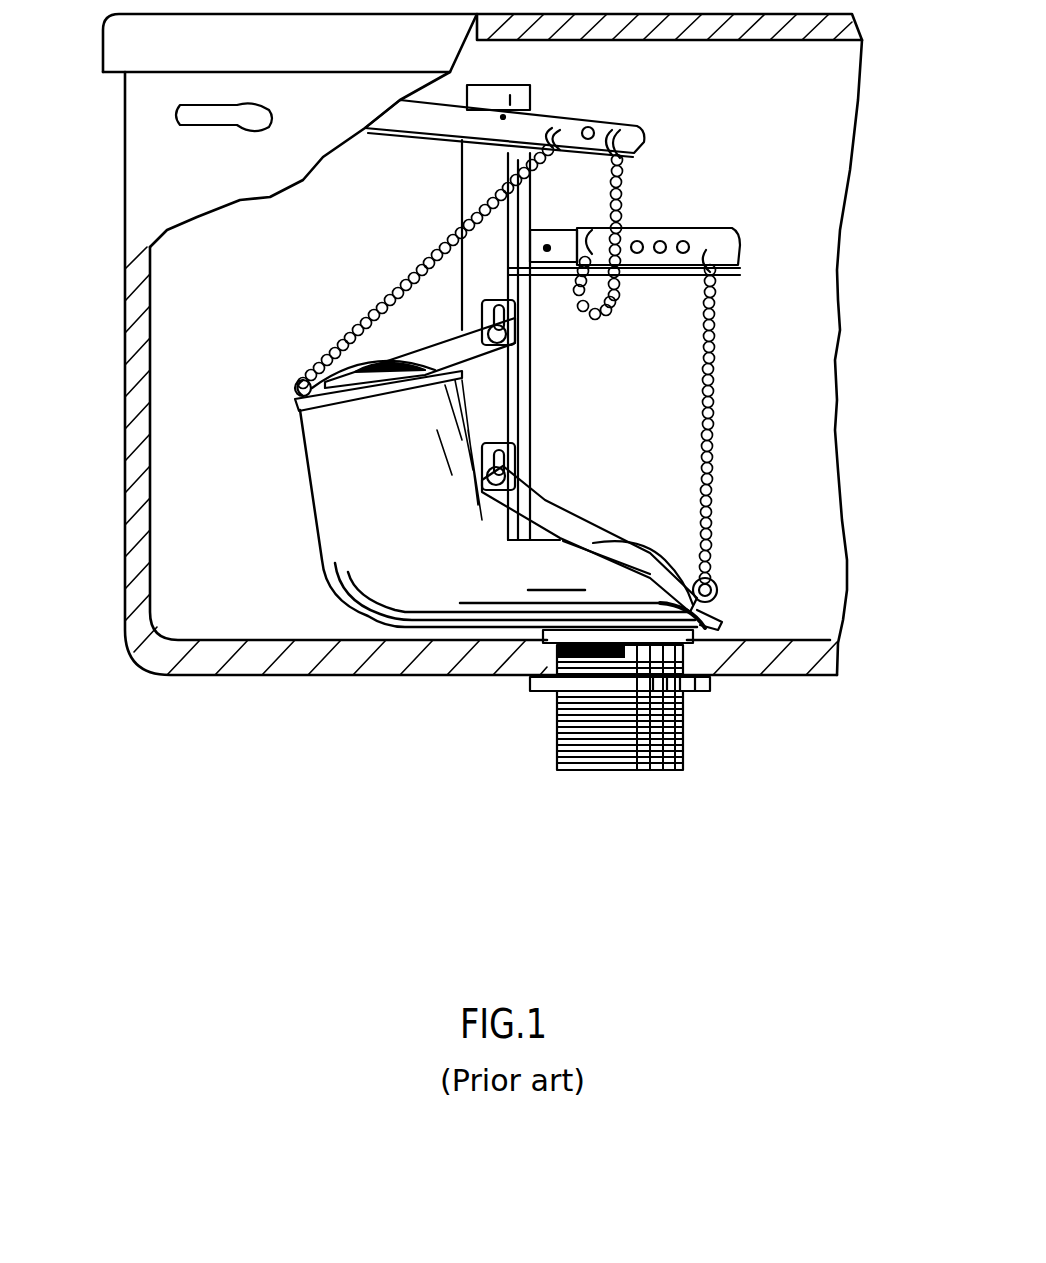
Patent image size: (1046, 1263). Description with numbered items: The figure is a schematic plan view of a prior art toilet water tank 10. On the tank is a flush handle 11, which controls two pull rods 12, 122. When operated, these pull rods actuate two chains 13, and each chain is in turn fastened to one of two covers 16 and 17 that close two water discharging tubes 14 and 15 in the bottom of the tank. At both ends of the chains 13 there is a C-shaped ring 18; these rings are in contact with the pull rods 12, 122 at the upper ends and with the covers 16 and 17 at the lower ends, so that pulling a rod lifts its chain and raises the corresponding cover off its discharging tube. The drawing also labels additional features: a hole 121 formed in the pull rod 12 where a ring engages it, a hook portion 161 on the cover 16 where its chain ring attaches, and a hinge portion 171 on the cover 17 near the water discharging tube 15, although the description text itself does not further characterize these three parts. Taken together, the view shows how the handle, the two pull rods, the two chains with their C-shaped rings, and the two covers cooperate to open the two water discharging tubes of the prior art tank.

The water tank 10 is at (830, 14).
The flush handle 11 is at (165, 117).
The pull rod 12 is at (520, 112).
The hole in trip lever arm 121 is at (590, 125).
The pull rod 122 is at (722, 228).
The chain 13 is at (415, 283).
The water discharging tube 14 is at (317, 510).
The water discharging tube 15 is at (720, 636).
The cover 16 is at (405, 362).
The hook of float lever 161 is at (292, 391).
The cover 17 is at (630, 543).
The flapper valve 171 is at (727, 629).
The C-shaped ring 18 is at (622, 125).